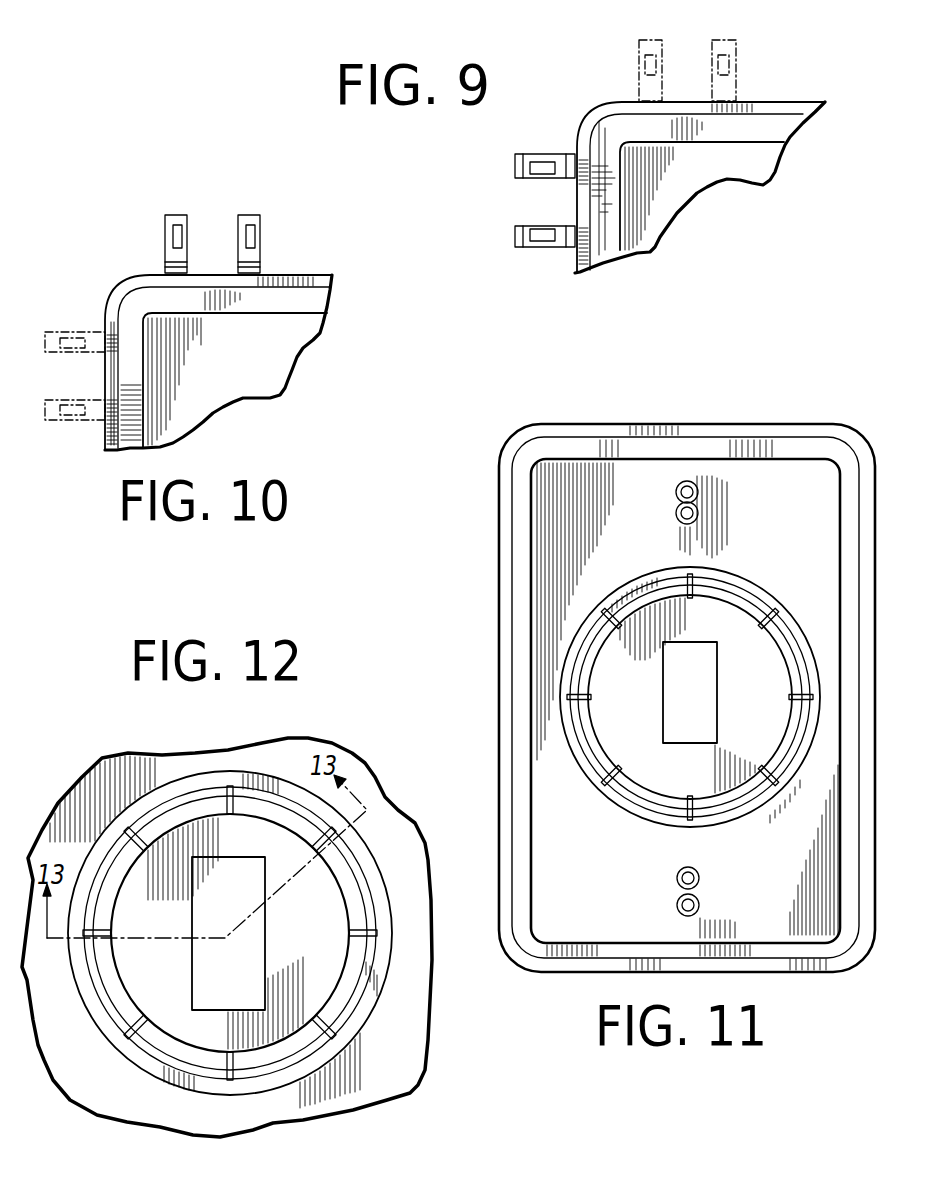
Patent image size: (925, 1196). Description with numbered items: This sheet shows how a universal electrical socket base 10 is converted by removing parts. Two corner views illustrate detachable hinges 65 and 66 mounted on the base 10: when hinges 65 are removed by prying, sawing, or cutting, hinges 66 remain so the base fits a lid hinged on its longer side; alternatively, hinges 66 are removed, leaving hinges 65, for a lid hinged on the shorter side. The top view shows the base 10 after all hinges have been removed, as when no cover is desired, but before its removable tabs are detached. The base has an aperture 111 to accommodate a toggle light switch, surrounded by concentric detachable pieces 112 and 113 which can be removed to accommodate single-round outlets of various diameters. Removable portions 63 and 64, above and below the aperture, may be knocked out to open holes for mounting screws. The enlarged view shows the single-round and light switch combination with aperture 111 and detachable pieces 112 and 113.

In FIG. 9, the base 10 is at (688, 182).
In FIG. 10, the base 10 is at (267, 358).
In FIG. 11, the base 10 is at (550, 477).
In FIG. 11, the removable portion 63 is at (698, 513).
In FIG. 11, the removable portion 64 is at (677, 905).
In FIG. 10, the detachable hinges 65 is at (270, 207).
In FIG. 9, the detachable hinges 66 is at (502, 142).
In FIG. 11, the aperture 111 is at (673, 692).
In FIG. 12, the aperture 111 is at (205, 985).
In FIG. 12, the detachable piece 112 is at (348, 948).
In FIG. 12, the detachable piece 113 is at (362, 988).